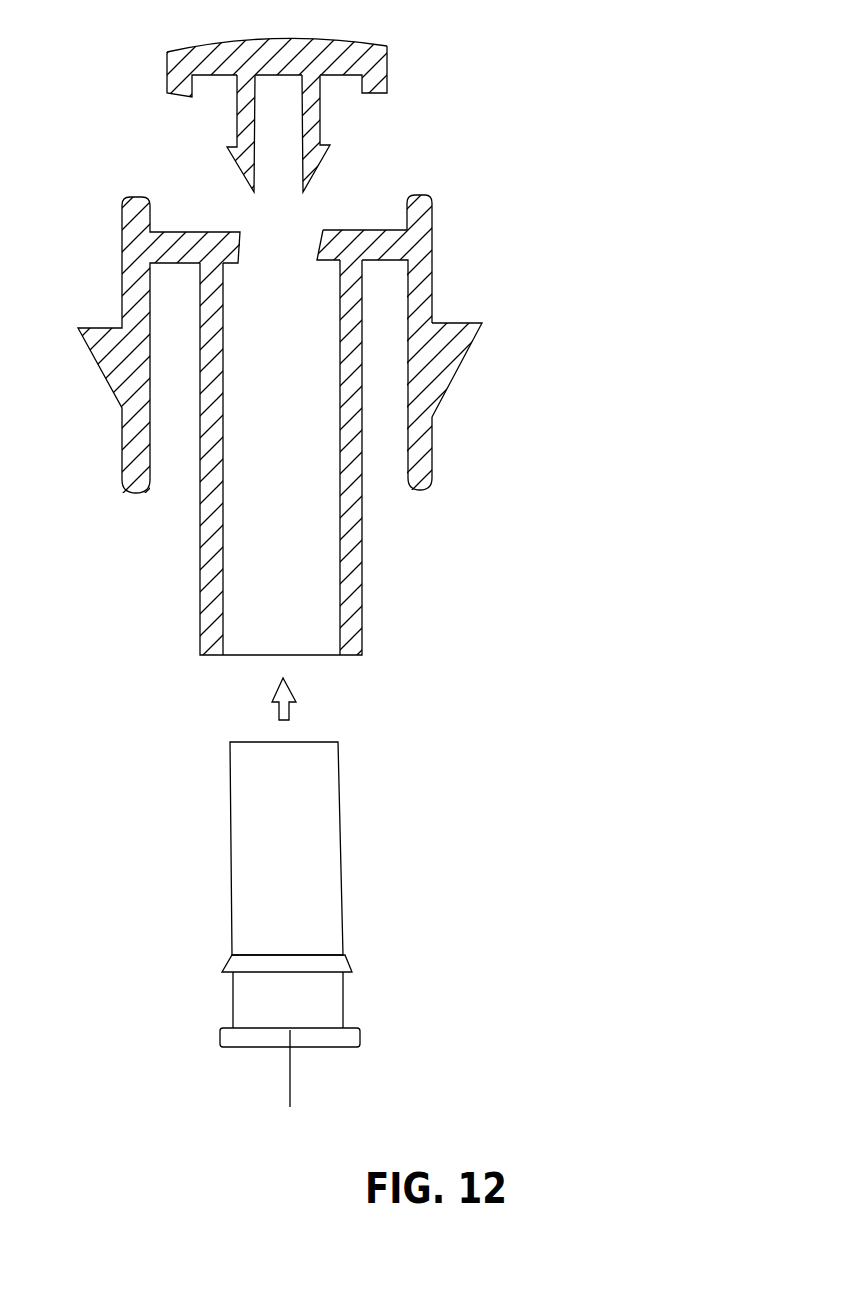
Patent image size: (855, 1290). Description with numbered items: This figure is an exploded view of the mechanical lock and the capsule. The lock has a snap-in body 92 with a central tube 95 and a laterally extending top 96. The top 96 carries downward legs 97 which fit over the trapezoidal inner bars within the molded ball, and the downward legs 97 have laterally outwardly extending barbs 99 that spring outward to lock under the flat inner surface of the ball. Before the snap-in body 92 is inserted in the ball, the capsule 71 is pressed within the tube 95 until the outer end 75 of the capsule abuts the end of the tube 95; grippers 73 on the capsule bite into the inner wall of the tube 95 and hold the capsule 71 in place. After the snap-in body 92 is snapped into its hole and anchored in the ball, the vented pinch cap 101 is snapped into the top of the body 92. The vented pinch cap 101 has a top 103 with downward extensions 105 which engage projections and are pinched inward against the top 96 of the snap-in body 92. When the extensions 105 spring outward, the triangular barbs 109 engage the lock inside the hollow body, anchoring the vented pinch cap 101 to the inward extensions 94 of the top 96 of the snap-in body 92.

The capsule 71 is at (343, 873).
The grippers 73 is at (346, 958).
The outer end 75 is at (361, 1033).
The snap-in body 92 is at (433, 415).
The inward extensions 94 is at (323, 264).
The central tube 95 is at (363, 560).
The laterally extending top 96 is at (378, 230).
The downward legs 97 is at (433, 283).
The barbs 99 is at (470, 353).
The vented pinch cap 101 is at (167, 72).
The top 103 is at (389, 46).
The downward extensions 105 is at (240, 118).
The triangular barbs 109 is at (322, 167).